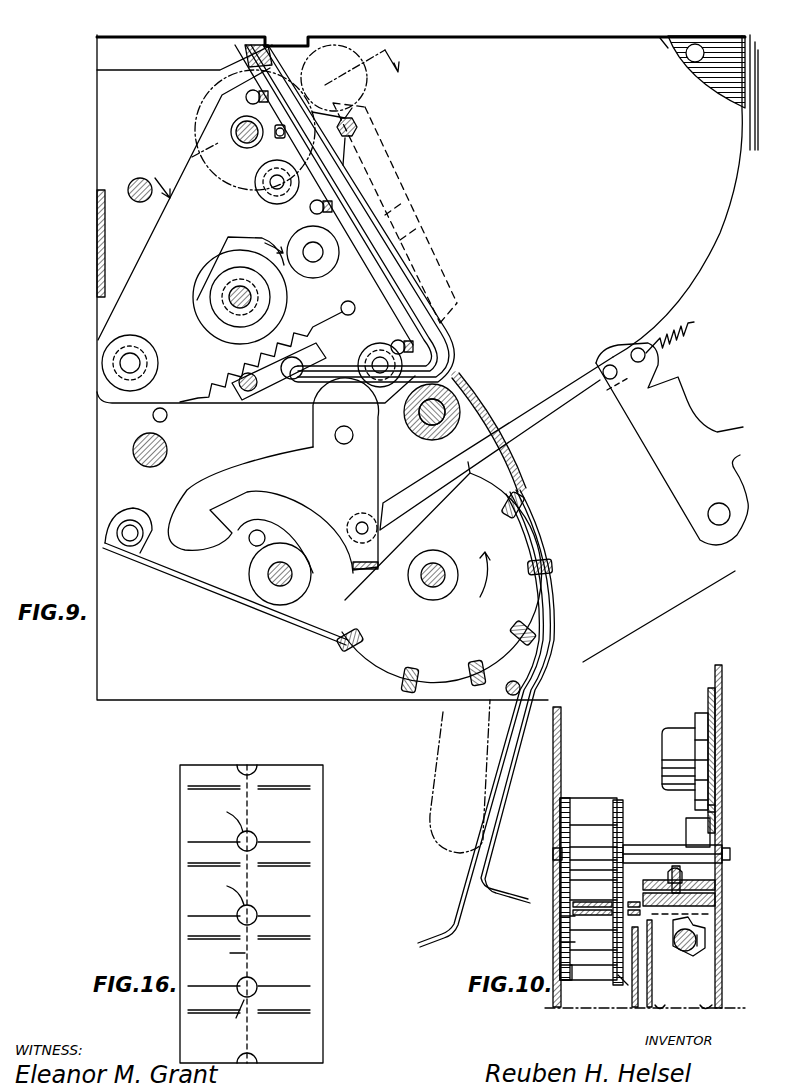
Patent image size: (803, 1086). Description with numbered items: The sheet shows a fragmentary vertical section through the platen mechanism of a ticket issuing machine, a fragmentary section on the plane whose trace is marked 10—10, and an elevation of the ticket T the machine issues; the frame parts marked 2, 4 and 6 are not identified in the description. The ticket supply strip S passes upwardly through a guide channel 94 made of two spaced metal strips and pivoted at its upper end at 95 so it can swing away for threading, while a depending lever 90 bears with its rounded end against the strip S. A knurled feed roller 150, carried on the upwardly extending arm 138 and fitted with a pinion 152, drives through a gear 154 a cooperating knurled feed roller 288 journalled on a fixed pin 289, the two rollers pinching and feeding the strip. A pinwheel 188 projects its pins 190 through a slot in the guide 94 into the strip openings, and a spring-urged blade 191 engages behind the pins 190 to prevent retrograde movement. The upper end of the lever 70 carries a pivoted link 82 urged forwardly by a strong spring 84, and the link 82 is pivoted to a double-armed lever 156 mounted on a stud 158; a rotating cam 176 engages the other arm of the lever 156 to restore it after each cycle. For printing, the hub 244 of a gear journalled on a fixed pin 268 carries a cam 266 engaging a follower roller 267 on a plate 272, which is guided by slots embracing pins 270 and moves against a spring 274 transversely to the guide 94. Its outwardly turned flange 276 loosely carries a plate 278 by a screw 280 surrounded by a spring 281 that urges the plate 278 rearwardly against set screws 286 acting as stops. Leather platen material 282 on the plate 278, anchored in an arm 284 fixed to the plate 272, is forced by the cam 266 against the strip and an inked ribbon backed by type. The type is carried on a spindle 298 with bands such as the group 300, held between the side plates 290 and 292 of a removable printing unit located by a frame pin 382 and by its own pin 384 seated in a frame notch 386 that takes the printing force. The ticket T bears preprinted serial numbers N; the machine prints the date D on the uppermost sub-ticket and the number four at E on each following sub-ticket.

In FIG. 10, the side plate 2 is at (562, 732).
In FIG. 9, the frame plate 4 is at (97, 455).
In FIG. 10, the frame plate 4 is at (723, 678).
In FIG. 10, the base 6 is at (630, 1000).
In FIG. 9, the section line 10 is at (281, 122).
In FIG. 9, the lever 70 is at (658, 470).
In FIG. 9, the link 82 is at (546, 428).
In FIG. 9, the strong spring 84 is at (692, 327).
In FIG. 9, the depending lever 90 is at (443, 723).
In FIG. 9, the guide channel 94 is at (555, 622).
In FIG. 10, the guide channel 94 is at (560, 918).
In FIG. 9, the pivot 95 is at (252, 44).
In FIG. 10, the upwardly extending arm 138 is at (560, 942).
In FIG. 9, the knurled feed roller 150 is at (343, 47).
In FIG. 10, the knurled feed roller 150 is at (623, 978).
In FIG. 10, the pinion 152 is at (578, 976).
In FIG. 10, the gear 154 is at (568, 803).
In FIG. 9, the double-armed lever 156 is at (190, 487).
In FIG. 9, the stud 158 is at (352, 439).
In FIG. 9, the cam 176 is at (260, 518).
In FIG. 9, the pinwheel 188 is at (383, 668).
In FIG. 9, the pins 190 is at (334, 651).
In FIG. 9, the blade 191 is at (185, 577).
In FIG. 9, the hub 244 is at (227, 304).
In FIG. 9, the cam 266 is at (227, 240).
In FIG. 10, the cam 266 is at (697, 722).
In FIG. 9, the follower roller 267 is at (310, 279).
In FIG. 10, the follower roller 267 is at (712, 828).
In FIG. 9, the fixed pin 268 is at (232, 291).
In FIG. 9, the pins 270 is at (262, 189).
In FIG. 9, the plate 272 is at (164, 221).
In FIG. 10, the plate 272 is at (708, 700).
In FIG. 9, the spring 274 is at (222, 377).
In FIG. 9, the outwardly turned flange 276 is at (362, 268).
In FIG. 9, the plate 278 is at (420, 340).
In FIG. 9, the screw 280 is at (276, 138).
In FIG. 10, the screw 280 is at (666, 855).
In FIG. 9, the spring 281 is at (272, 146).
In FIG. 10, the spring 281 is at (668, 882).
In FIG. 9, the platen material 282 is at (362, 215).
In FIG. 9, the arm 284 is at (279, 381).
In FIG. 9, the set screws 286 is at (246, 96).
In FIG. 9, the knurled feed roller 288 is at (197, 116).
In FIG. 10, the knurled feed roller 288 is at (618, 803).
In FIG. 10, the fixed pin 289 is at (677, 847).
In FIG. 9, the side plate 290 is at (720, 98).
In FIG. 10, the side plate 290 is at (711, 1007).
In FIG. 9, the side plate 292 is at (596, 101).
In FIG. 10, the side plate 292 is at (662, 1007).
In FIG. 9, the type carrying member 298 is at (446, 279).
In FIG. 10, the type carrying member 298 is at (644, 922).
In FIG. 10, the type group 300 is at (700, 941).
In FIG. 9, the pin 382 is at (360, 128).
In FIG. 9, the pin 384 is at (700, 45).
In FIG. 9, the notch 386 is at (668, 48).
In FIG. 16, the serial numbers N is at (195, 833).
In FIG. 16, the date D is at (303, 812).
In FIG. 16, the ticket T is at (323, 845).
In FIG. 16, the printed number E is at (303, 888).
In FIG. 10, the ticket supply strip S is at (713, 914).